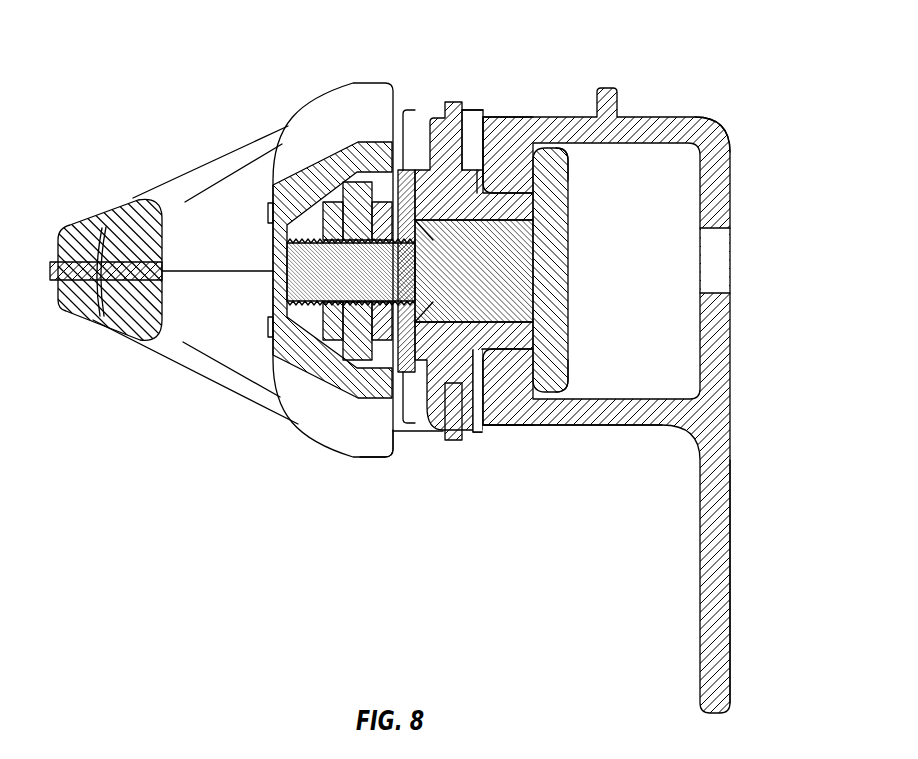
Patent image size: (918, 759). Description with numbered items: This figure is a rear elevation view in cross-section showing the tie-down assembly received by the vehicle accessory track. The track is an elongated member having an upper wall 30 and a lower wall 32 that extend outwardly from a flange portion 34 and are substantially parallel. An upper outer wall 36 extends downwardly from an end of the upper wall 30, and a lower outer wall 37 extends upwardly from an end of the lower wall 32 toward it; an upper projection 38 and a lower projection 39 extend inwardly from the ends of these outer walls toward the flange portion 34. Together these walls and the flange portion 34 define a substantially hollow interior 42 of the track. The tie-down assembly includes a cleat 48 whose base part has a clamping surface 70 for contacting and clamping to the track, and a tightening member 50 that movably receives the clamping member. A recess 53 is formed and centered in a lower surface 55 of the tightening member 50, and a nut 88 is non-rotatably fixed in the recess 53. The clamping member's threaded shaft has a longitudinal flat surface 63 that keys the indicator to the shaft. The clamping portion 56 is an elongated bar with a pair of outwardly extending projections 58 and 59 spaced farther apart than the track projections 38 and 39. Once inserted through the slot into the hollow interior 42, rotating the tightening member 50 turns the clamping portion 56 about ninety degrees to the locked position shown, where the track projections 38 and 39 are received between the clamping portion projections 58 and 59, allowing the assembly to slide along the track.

The upper wall 30 is at (576, 117).
The lower wall 32 is at (632, 427).
The flange portion 34 is at (700, 662).
The upper outer wall 36 is at (478, 140).
The lower outer wall 37 is at (449, 437).
The upper projection 38 is at (567, 176).
The lower projection 39 is at (566, 346).
The hollow interior 42 is at (677, 167).
The cleat 48 is at (157, 354).
The tightening member 50 is at (376, 76).
The recess 53 is at (309, 262).
The lower surface 55 is at (391, 438).
The clamping portion 56 is at (567, 316).
The outwardly extending projection 58 is at (527, 395).
The outwardly extending projection 59 is at (528, 145).
The flat surface 63 is at (309, 260).
The clamping surface 70 is at (476, 138).
The nut 88 is at (351, 333).